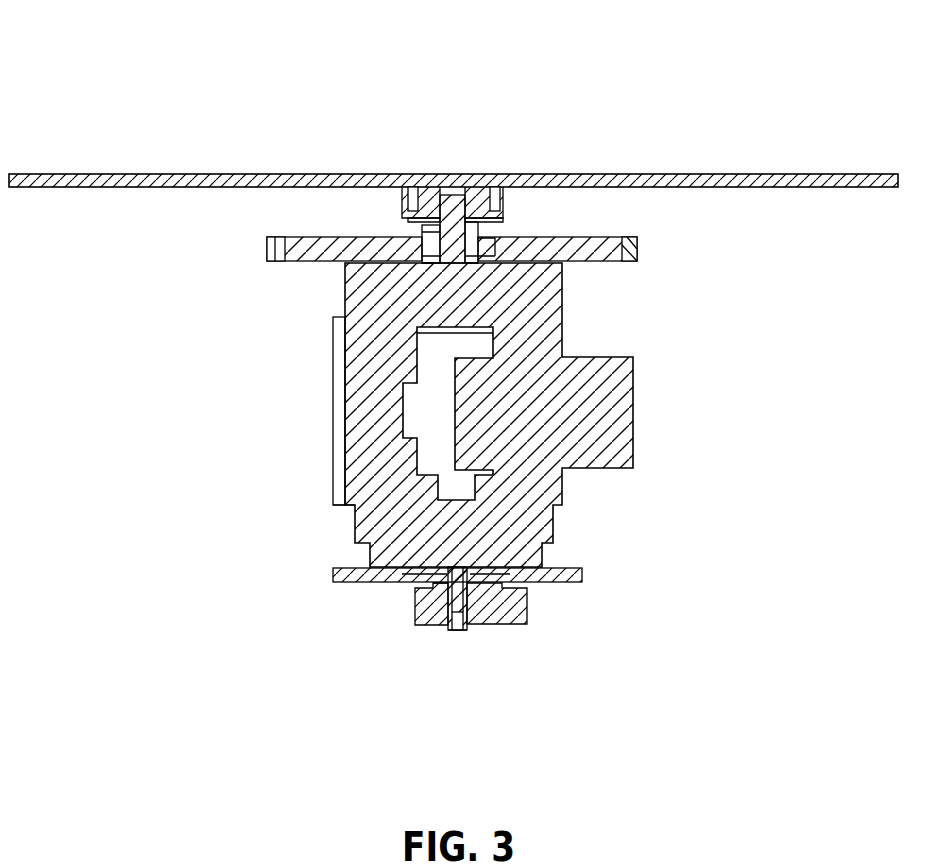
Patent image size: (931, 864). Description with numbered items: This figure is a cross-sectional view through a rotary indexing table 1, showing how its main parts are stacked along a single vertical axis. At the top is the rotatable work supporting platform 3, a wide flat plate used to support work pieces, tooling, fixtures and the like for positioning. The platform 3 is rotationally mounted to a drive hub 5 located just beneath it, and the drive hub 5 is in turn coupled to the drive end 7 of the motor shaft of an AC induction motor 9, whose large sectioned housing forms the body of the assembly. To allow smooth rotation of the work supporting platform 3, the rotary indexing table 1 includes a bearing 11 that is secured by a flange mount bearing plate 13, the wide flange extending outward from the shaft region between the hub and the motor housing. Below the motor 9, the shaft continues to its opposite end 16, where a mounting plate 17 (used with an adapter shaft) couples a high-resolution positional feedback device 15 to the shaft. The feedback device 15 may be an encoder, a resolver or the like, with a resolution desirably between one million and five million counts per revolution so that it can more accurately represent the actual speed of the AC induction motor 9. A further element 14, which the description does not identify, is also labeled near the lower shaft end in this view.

The rotary indexing table 1 is at (72, 136).
The rotatable work supporting platform 3 is at (550, 175).
The drive hub 5 is at (503, 218).
The drive end 7 is at (445, 238).
The AC induction motor 9 is at (563, 404).
The bearing 11 is at (474, 243).
The flange mount bearing plate 13 is at (603, 250).
The shaft end 14 is at (470, 627).
The high-resolution positional feedback device 15 is at (512, 613).
The opposite end 16 is at (453, 590).
The mounting plate 17 is at (563, 573).